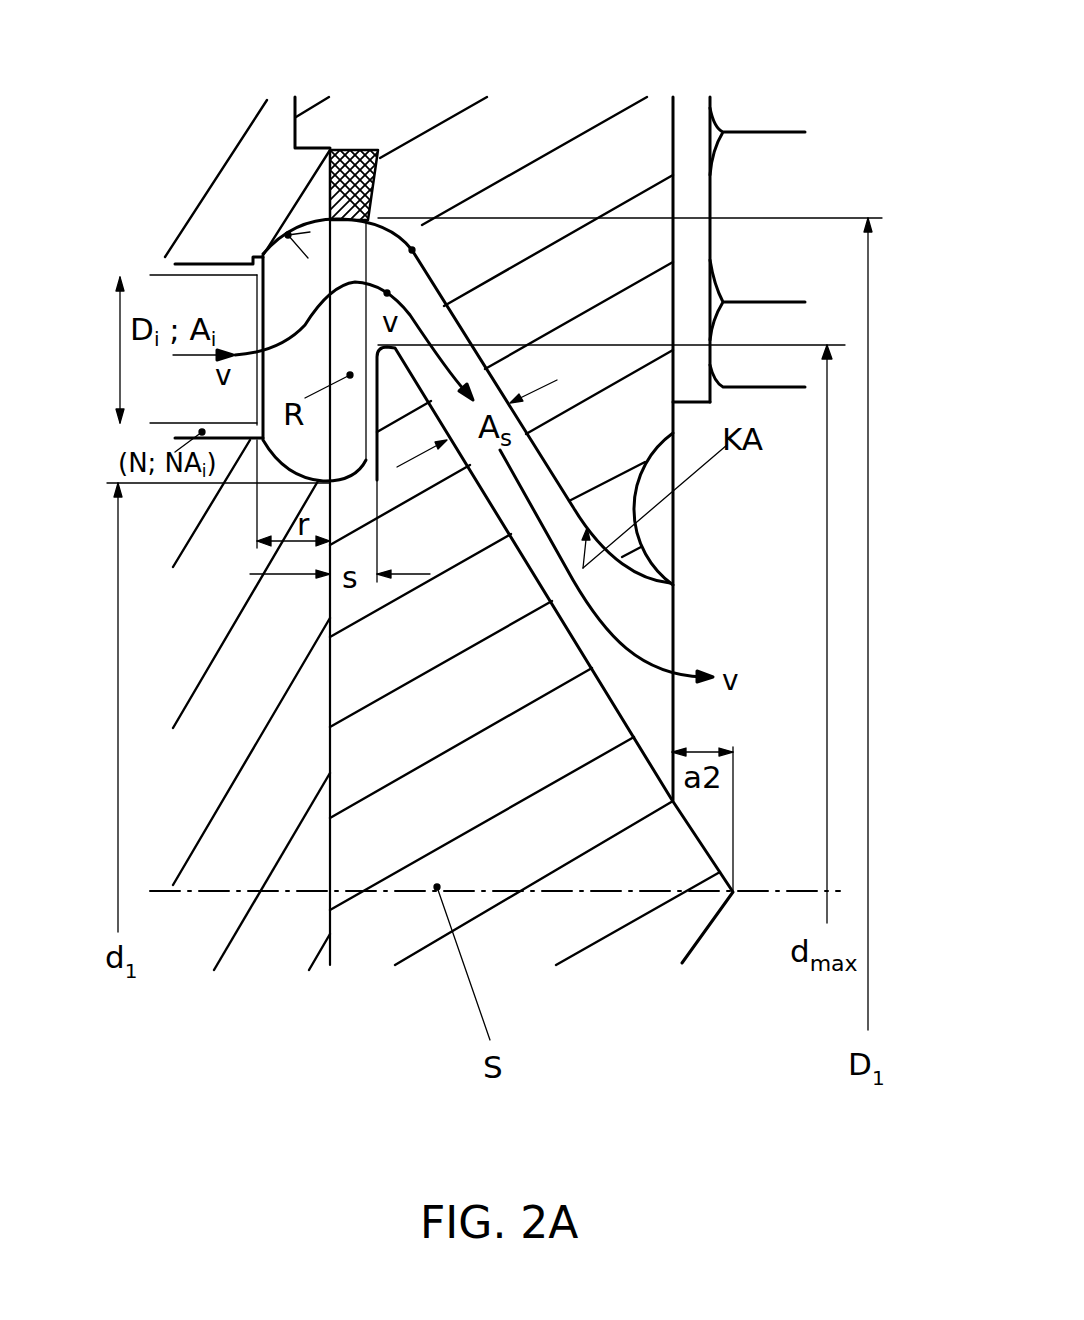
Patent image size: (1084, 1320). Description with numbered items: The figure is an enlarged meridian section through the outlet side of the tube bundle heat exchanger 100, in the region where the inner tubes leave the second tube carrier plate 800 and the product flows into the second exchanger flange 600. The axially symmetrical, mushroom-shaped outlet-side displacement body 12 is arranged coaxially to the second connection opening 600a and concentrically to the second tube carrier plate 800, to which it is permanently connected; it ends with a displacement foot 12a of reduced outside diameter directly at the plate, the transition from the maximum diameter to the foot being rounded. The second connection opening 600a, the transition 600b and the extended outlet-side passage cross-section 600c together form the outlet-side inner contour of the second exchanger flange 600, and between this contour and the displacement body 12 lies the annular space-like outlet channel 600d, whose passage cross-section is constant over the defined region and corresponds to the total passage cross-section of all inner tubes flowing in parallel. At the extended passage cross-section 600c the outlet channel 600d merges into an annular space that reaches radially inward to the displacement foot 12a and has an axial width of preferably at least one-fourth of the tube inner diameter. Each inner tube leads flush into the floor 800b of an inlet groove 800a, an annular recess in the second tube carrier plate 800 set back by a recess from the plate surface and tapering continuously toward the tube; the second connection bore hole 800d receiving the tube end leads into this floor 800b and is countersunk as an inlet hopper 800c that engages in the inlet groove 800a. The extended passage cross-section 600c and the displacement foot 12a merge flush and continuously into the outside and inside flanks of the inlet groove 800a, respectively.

The tube bundle heat exchanger 100 is at (178, 966).
The outlet-side displacement body 12 is at (627, 863).
The displacement foot 12a is at (345, 845).
The second exchanger flange 600 is at (608, 252).
The second connection opening 600a is at (671, 633).
The transition 600b is at (425, 270).
The extended outlet-side passage cross-section 600c is at (370, 220).
The annular space-like outlet channel 600d is at (618, 593).
The second tube carrier plate 800 is at (255, 173).
The inlet groove 800a is at (357, 175).
The floor 800b is at (213, 263).
The inlet hopper 800c is at (305, 360).
The second connection bore hole 800d is at (180, 262).